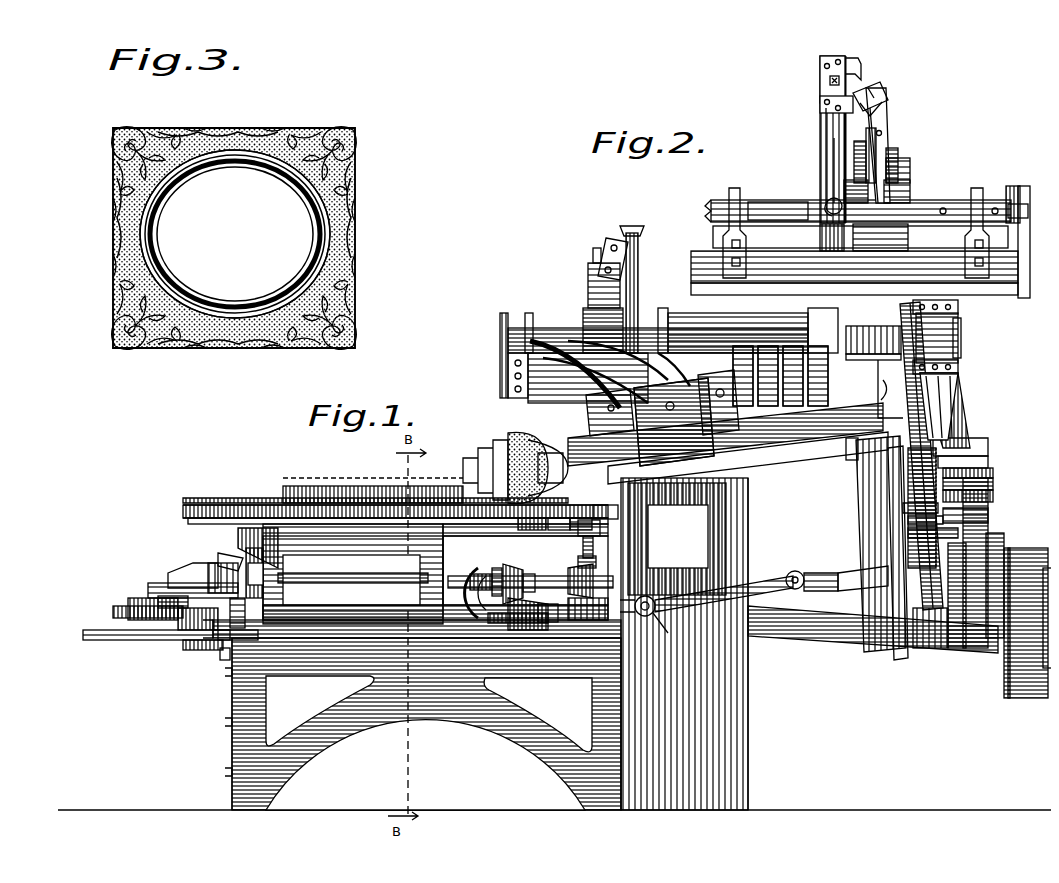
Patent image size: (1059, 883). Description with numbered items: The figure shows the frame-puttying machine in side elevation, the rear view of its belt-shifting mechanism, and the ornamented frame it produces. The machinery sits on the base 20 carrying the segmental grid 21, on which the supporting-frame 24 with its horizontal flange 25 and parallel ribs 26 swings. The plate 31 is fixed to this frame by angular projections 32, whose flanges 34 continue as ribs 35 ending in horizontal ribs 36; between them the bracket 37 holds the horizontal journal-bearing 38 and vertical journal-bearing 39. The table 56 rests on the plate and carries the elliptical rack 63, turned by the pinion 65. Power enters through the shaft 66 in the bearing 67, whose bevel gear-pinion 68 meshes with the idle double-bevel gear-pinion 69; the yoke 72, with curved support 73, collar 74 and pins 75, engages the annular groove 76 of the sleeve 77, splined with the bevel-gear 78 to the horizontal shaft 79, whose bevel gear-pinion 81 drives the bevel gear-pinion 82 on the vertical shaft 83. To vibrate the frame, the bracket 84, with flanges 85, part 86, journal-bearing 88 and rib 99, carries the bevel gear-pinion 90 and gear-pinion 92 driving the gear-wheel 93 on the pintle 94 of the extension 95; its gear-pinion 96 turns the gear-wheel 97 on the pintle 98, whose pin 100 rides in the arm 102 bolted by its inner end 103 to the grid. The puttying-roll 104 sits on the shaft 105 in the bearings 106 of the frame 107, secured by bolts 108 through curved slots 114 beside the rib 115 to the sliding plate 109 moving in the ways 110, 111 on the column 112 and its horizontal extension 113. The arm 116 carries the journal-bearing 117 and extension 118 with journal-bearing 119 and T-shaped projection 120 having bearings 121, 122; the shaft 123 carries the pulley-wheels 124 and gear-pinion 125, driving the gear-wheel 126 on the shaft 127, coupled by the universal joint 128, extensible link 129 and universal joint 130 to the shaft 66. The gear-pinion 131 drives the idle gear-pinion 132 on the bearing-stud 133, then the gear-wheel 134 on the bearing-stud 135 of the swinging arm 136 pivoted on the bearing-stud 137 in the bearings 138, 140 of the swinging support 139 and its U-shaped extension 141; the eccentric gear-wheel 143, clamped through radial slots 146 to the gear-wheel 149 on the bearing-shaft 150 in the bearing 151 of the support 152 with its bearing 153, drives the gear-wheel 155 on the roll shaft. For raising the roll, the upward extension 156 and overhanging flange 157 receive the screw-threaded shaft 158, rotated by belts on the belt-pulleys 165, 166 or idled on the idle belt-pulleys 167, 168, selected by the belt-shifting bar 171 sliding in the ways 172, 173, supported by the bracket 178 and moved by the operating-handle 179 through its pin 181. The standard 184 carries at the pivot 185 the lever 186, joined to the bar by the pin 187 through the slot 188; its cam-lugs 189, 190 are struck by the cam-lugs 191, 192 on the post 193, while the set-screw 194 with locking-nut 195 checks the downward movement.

In FIG. 1, the base 20 is at (470, 700).
In FIG. 1, the opening 21 is at (520, 666).
In FIG. 1, the bed plate 24 is at (385, 605).
In FIG. 1, the opening 25 is at (345, 666).
In FIG. 1, the carriage block 26 is at (442, 598).
In FIG. 1, the carriage 31 is at (358, 540).
In FIG. 1, the rail 32 is at (262, 500).
In FIG. 1, the slide 34 is at (318, 495).
In FIG. 1, the bracket 35 is at (525, 508).
In FIG. 1, the bracket 36 is at (555, 508).
In FIG. 1, the bracket 37 is at (580, 508).
In FIG. 1, the shaft 38 is at (548, 568).
In FIG. 1, the bearing 39 is at (585, 540).
In FIG. 1, the bar 56 is at (210, 491).
In FIG. 1, the plate 63 is at (235, 512).
In FIG. 1, the bracket 65 is at (605, 505).
In FIG. 1, the pivot 66 is at (632, 590).
In FIG. 1, the support 67 is at (560, 615).
In FIG. 1, the block 68 is at (542, 612).
In FIG. 1, the gear 69 is at (548, 582).
In FIG. 1, the gear 72 is at (468, 585).
In FIG. 1, the gear 73 is at (480, 603).
In FIG. 1, the table 74 is at (495, 626).
In FIG. 1, the collar 75 is at (478, 566).
In FIG. 1, the gear 76 is at (489, 560).
In FIG. 1, the gear 77 is at (508, 558).
In FIG. 1, the gear 78 is at (522, 566).
In FIG. 1, the rod 79 is at (372, 572).
In FIG. 1, the gear 81 is at (578, 578).
In FIG. 1, the bearing 82 is at (588, 556).
In FIG. 1, the bracket 83 is at (600, 518).
In FIG. 1, the bracket 84 is at (212, 565).
In FIG. 1, the plate 85 is at (257, 585).
In FIG. 1, the slot 86 is at (243, 580).
In FIG. 1, the arm 88 is at (222, 548).
In FIG. 1, the bracket 90 is at (232, 543).
In FIG. 1, the bearing 92 is at (236, 603).
In FIG. 1, the pin 93 is at (215, 622).
In FIG. 1, the gear 94 is at (178, 588).
In FIG. 1, the plate 95 is at (182, 576).
In FIG. 1, the shaft 96 is at (192, 642).
In FIG. 1, the shaft 97 is at (105, 604).
In FIG. 1, the gear 98 is at (135, 596).
In FIG. 1, the bracket 99 is at (192, 558).
In FIG. 1, the gear 100 is at (180, 620).
In FIG. 1, the rod 102 is at (105, 632).
In FIG. 1, the pin 103 is at (216, 645).
In FIG. 1, the scroll pattern 104 is at (490, 430).
In FIG. 1, the slide bar 105 is at (790, 425).
In FIG. 1, the block 106 is at (580, 412).
In FIG. 1, the block 107 is at (674, 422).
In FIG. 1, the block 108 is at (660, 378).
In FIG. 2, the beam 109 is at (935, 205).
In FIG. 1, the beam 109 is at (658, 365).
In FIG. 1, the block 110 is at (725, 342).
In FIG. 1, the bracket 111 is at (503, 358).
In FIG. 1, the window 112 is at (716, 512).
In FIG. 2, the bar 113 is at (854, 260).
In FIG. 1, the curved guide 114 is at (575, 373).
In FIG. 1, the curved rack 115 is at (540, 340).
In FIG. 1, the bar 116 is at (775, 460).
In FIG. 1, the pin 117 is at (874, 376).
In FIG. 1, the plate 118 is at (862, 481).
In FIG. 1, the plate 119 is at (888, 652).
In FIG. 1, the shaft 120 is at (880, 608).
In FIG. 1, the gear 121 is at (980, 535).
In FIG. 1, the gear 122 is at (955, 640).
In FIG. 1, the bearing 123 is at (925, 640).
In FIG. 1, the gear 124 is at (1025, 545).
In FIG. 1, the hub 125 is at (1000, 645).
In FIG. 1, the gear 126 is at (992, 528).
In FIG. 1, the block 127 is at (830, 568).
In FIG. 1, the pivot 128 is at (790, 563).
In FIG. 1, the link 129 is at (742, 576).
In FIG. 1, the link 130 is at (662, 626).
In FIG. 1, the rod 131 is at (872, 574).
In FIG. 1, the block 132 is at (965, 512).
In FIG. 1, the gear 133 is at (915, 538).
In FIG. 1, the plate 134 is at (900, 524).
In FIG. 1, the plate 135 is at (985, 488).
In FIG. 1, the plate 136 is at (980, 465).
In FIG. 1, the plate 137 is at (968, 452).
In FIG. 1, the plate 138 is at (945, 432).
In FIG. 1, the rack 139 is at (945, 420).
In FIG. 1, the bracket 140 is at (880, 466).
In FIG. 1, the bar 141 is at (900, 512).
In FIG. 1, the rack 143 is at (925, 378).
In FIG. 1, the block 146 is at (938, 338).
In FIG. 1, the plate 149 is at (920, 300).
In FIG. 1, the plate 150 is at (840, 327).
In FIG. 1, the block 151 is at (860, 318).
In FIG. 1, the bracket 152 is at (870, 360).
In FIG. 1, the bar 153 is at (895, 499).
In FIG. 1, the rack 155 is at (935, 385).
In FIG. 2, the block 156 is at (846, 270).
In FIG. 1, the block 156 is at (578, 302).
In FIG. 2, the block 157 is at (903, 180).
In FIG. 2, the block 158 is at (902, 165).
In FIG. 1, the block 158 is at (582, 278).
In FIG. 1, the slab 165 is at (800, 348).
In FIG. 1, the slab 166 is at (735, 338).
In FIG. 1, the slab 167 is at (805, 338).
In FIG. 1, the slab 168 is at (760, 338).
In FIG. 2, the bar 171 is at (778, 200).
In FIG. 1, the bar 171 is at (708, 340).
In FIG. 2, the bracket 172 is at (722, 195).
In FIG. 1, the bracket 172 is at (680, 338).
In FIG. 2, the bracket 173 is at (970, 186).
In FIG. 1, the bracket 173 is at (520, 308).
In FIG. 1, the slab 178 is at (780, 338).
In FIG. 2, the post 179 is at (1012, 176).
In FIG. 1, the post 179 is at (492, 307).
In FIG. 2, the bracket 181 is at (1008, 196).
In FIG. 2, the block 184 is at (822, 236).
In FIG. 2, the head 185 is at (820, 72).
In FIG. 2, the post 186 is at (823, 128).
In FIG. 2, the hook 187 is at (818, 192).
In FIG. 2, the rod 188 is at (816, 175).
In FIG. 2, the catch 189 is at (848, 52).
In FIG. 2, the arm 190 is at (822, 93).
In FIG. 2, the wedge 191 is at (868, 84).
In FIG. 2, the post 192 is at (880, 108).
In FIG. 2, the column 193 is at (866, 143).
In FIG. 2, the column 194 is at (848, 150).
In FIG. 2, the screw 195 is at (891, 150).